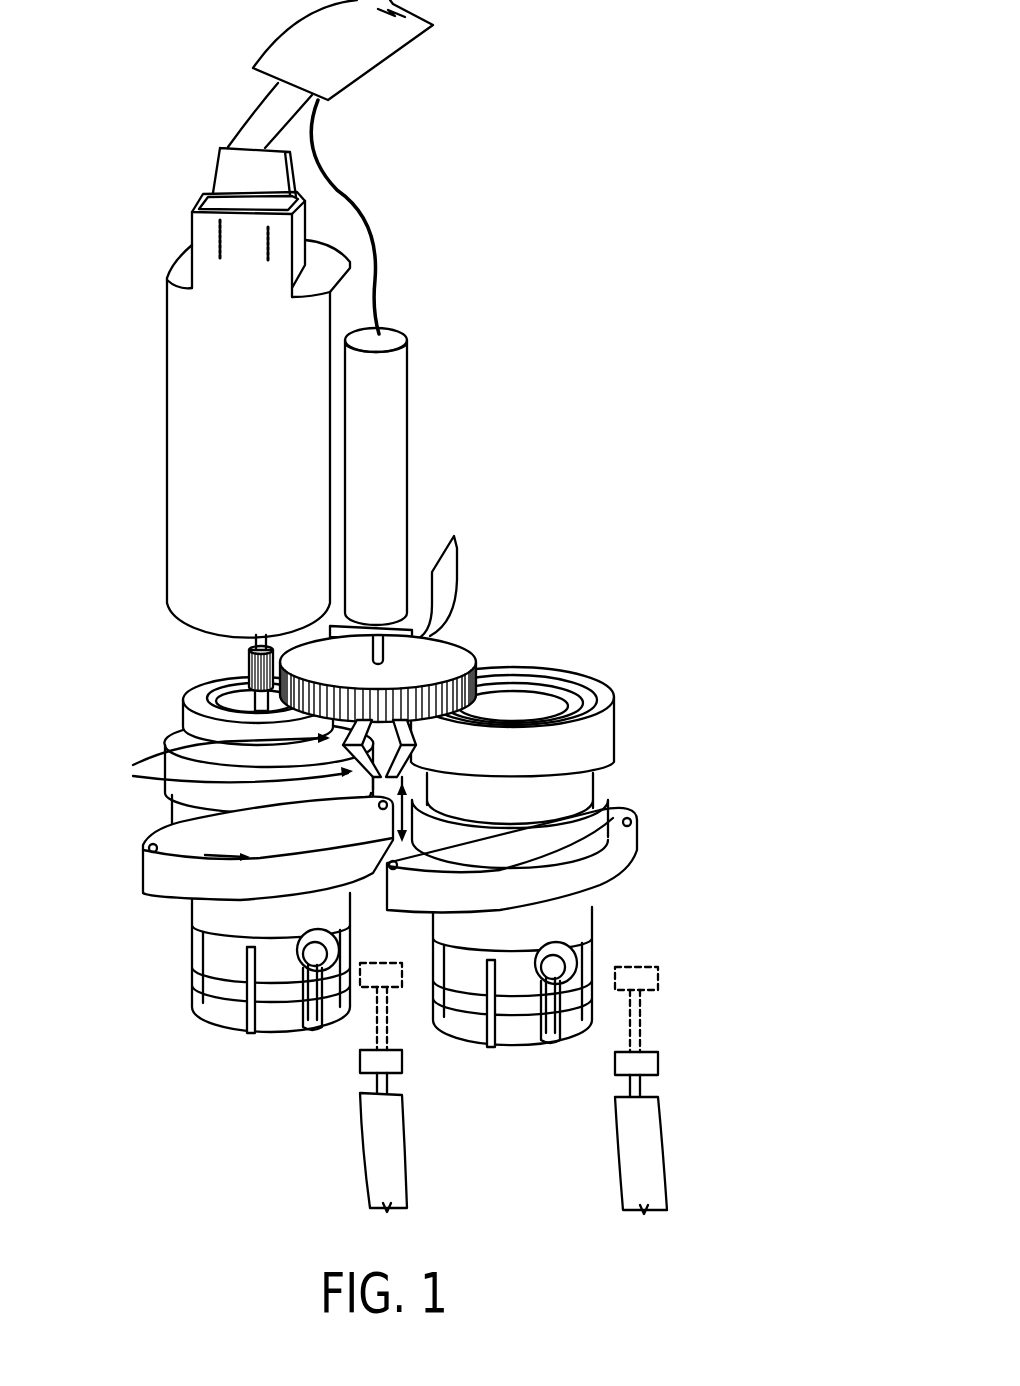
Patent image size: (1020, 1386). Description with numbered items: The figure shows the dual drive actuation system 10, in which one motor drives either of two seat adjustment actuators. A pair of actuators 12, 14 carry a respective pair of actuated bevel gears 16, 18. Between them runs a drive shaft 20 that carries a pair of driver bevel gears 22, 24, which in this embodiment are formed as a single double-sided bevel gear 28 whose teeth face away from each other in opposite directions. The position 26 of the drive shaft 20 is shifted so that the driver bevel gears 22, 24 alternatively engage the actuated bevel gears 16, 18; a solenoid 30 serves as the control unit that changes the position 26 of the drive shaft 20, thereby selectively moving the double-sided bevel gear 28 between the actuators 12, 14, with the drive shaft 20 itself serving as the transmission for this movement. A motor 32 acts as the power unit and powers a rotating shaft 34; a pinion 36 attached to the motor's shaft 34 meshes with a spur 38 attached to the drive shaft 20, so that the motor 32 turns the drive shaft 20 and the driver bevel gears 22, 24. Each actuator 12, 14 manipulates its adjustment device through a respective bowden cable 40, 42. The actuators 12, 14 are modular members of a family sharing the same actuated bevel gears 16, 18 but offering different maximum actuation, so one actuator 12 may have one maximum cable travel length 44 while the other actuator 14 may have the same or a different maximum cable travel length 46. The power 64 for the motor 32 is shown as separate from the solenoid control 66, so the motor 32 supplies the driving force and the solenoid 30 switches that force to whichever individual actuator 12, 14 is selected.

The dual drive actuation system 10 is at (608, 305).
The actuator 12 is at (627, 850).
The actuator 14 is at (157, 838).
The actuated bevel gear 16 is at (600, 733).
The actuated bevel gear 18 is at (212, 732).
The drive shaft 20 is at (445, 637).
The driver bevel gear 22 is at (403, 748).
The driver bevel gear 24 is at (597, 773).
The position of the drive shaft 26 is at (610, 813).
The double-sided bevel gear 28 is at (236, 787).
The solenoid 30 is at (380, 452).
The motor 32 is at (200, 430).
The rotating shaft 34 is at (250, 648).
The pinion 36 is at (240, 678).
The spur 38 is at (460, 662).
The bowden cable 40 is at (640, 1147).
The bowden cable 42 is at (385, 1143).
The maximum cable travel length 44 is at (640, 1027).
The maximum cable travel length 46 is at (390, 1027).
The power for the motor 64 is at (247, 127).
The solenoid control 66 is at (363, 200).